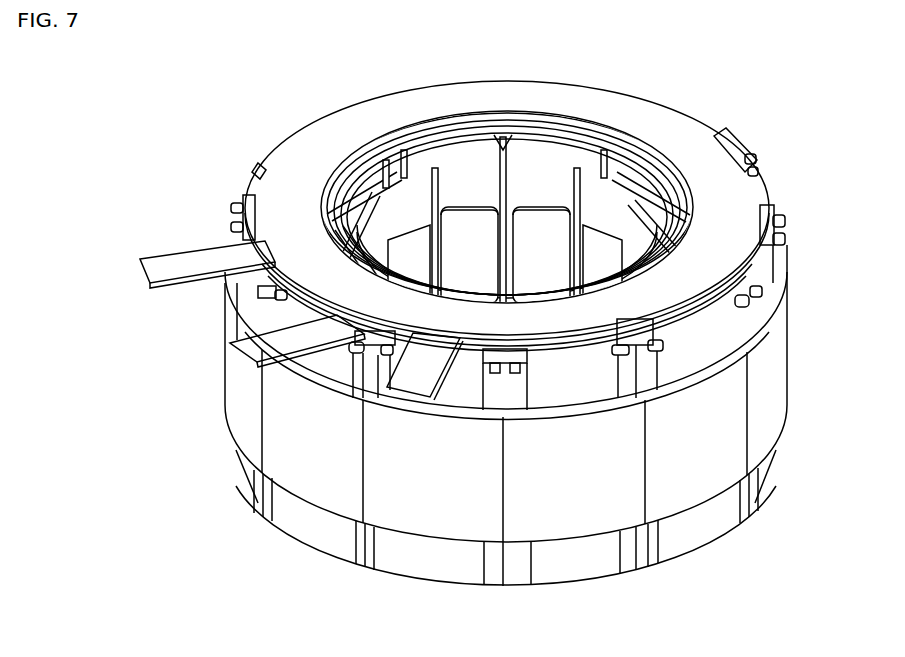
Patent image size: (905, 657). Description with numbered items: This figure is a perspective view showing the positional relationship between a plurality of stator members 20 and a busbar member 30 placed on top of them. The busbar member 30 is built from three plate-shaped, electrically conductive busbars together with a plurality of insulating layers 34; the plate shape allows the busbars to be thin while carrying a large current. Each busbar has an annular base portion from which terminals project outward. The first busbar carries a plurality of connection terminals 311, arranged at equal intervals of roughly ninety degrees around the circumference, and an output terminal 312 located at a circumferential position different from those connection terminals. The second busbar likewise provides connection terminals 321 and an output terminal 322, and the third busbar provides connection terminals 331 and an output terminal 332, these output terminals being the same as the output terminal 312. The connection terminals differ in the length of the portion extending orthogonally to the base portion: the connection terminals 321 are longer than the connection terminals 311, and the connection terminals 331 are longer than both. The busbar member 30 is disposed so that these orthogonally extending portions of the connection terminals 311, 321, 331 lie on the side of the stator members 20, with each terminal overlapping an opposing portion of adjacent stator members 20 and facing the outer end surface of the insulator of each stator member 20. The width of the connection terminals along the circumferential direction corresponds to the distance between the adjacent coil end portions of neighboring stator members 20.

The stator member 20 is at (785, 262).
The busbar member 30 is at (788, 150).
The insulating layers 34 is at (562, 128).
The connection terminal 311 is at (258, 170).
The output terminal 312 is at (168, 262).
The connection terminal 321 is at (245, 205).
The output terminal 322 is at (232, 343).
The connection terminal 331 is at (735, 144).
The output terminal 332 is at (405, 380).